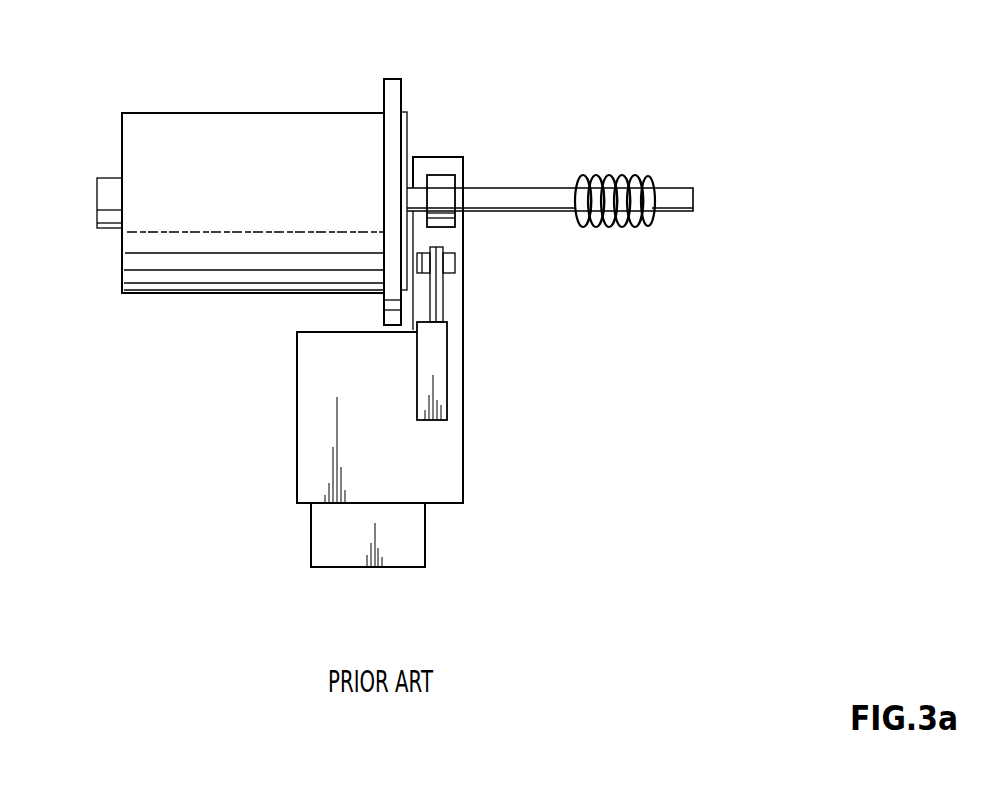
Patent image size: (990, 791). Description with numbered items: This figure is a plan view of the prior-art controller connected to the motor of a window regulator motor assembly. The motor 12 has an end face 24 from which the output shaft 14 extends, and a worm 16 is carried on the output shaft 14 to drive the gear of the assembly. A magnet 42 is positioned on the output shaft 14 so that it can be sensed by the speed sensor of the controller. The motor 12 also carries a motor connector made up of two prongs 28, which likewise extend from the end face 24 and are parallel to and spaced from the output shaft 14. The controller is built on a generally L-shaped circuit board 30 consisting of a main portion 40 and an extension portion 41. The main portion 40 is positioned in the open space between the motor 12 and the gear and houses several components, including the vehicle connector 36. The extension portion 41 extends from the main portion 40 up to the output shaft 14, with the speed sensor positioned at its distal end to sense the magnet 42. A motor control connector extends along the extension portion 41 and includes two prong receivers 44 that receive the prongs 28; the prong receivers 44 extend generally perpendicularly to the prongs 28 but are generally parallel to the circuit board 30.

The motor 12 is at (178, 112).
The end face 24 is at (408, 123).
The extension portion 41 is at (463, 243).
The output shaft 14 is at (522, 188).
The magnet 42 is at (437, 175).
The worm 16 is at (607, 177).
The prongs 28 is at (455, 265).
The prong receivers 44 is at (443, 310).
The main portion 40 is at (464, 447).
The circuit board 30 is at (464, 493).
The vehicle connector 36 is at (425, 527).